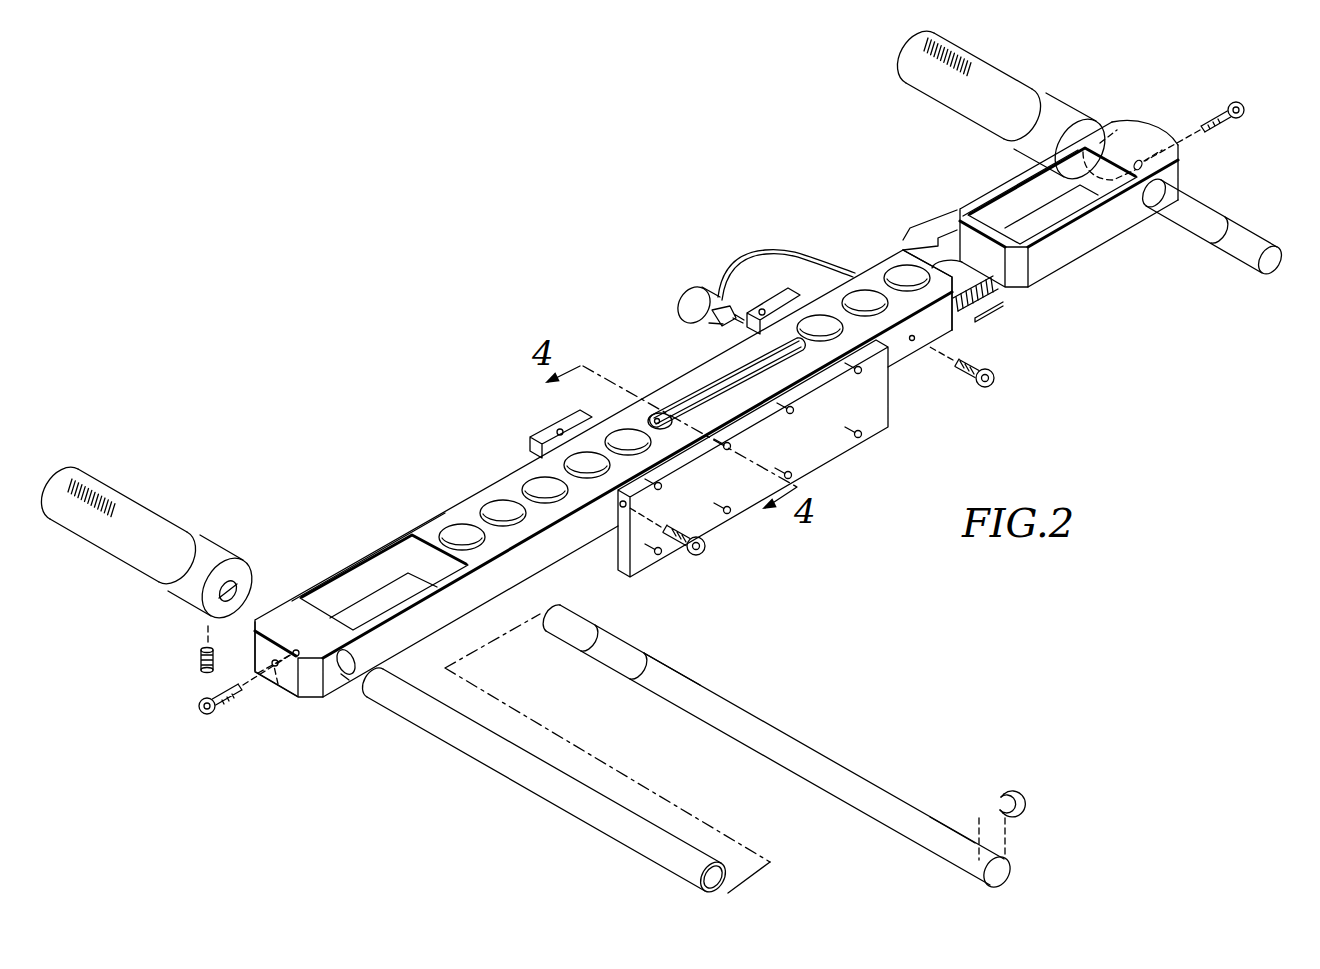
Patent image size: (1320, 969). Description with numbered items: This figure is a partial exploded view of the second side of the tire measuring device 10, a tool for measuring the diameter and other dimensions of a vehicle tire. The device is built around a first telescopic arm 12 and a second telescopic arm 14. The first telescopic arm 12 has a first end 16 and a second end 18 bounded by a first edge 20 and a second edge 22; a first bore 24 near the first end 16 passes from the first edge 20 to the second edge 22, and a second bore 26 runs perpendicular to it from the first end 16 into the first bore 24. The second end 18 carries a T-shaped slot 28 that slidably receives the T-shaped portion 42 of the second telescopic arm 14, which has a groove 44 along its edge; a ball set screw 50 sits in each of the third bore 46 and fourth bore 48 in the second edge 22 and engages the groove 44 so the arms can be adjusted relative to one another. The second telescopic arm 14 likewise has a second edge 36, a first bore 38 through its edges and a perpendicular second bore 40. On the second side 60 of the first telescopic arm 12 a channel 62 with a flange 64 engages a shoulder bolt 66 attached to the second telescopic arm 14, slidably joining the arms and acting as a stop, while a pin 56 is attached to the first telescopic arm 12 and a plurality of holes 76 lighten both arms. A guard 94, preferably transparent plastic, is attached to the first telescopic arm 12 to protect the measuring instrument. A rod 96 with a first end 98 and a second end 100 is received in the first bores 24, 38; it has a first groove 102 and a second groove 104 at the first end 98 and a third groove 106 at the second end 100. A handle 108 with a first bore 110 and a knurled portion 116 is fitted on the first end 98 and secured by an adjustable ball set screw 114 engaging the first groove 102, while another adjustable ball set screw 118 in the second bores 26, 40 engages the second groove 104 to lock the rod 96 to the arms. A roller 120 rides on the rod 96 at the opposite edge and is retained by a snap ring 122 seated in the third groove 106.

The tire measuring device 10 is at (350, 323).
The first telescopic arm 12 is at (367, 550).
The second telescopic arm 14 is at (965, 210).
The first end 16 is at (265, 650).
The second end 18 is at (958, 320).
The first edge 20 is at (374, 547).
The second edge 22 is at (440, 612).
The first bore 24 is at (356, 672).
The second bore 26 is at (287, 673).
The T-shaped slot 28 is at (988, 306).
The second edge 36 is at (1085, 240).
The first bore 38 is at (1115, 128).
The second bore 40 is at (1150, 141).
The T-shaped portion 42 is at (935, 245).
The groove 44 is at (985, 298).
The third bore 46 is at (623, 507).
The fourth bore 48 is at (912, 341).
The ball set screw 50 is at (697, 556).
The pin 56 is at (680, 300).
The second side 60 is at (486, 555).
The channel 62 is at (693, 400).
The flange 64 is at (737, 375).
The shoulder bolt 66 is at (653, 420).
The holes 76 is at (353, 590).
The guard 94 is at (718, 522).
The rod 96 is at (800, 740).
The first end 98 is at (602, 663).
The second end 100 is at (920, 810).
The first groove 102 is at (583, 624).
The second groove 104 is at (645, 652).
The third groove 106 is at (995, 858).
The handle 108 is at (91, 552).
The first bore 110 is at (238, 585).
The adjustable ball set screw 114 is at (200, 658).
The knurled portion 116 is at (103, 483).
The adjustable ball set screw 118 is at (206, 718).
The roller 120 is at (455, 750).
The snap ring 122 is at (990, 790).